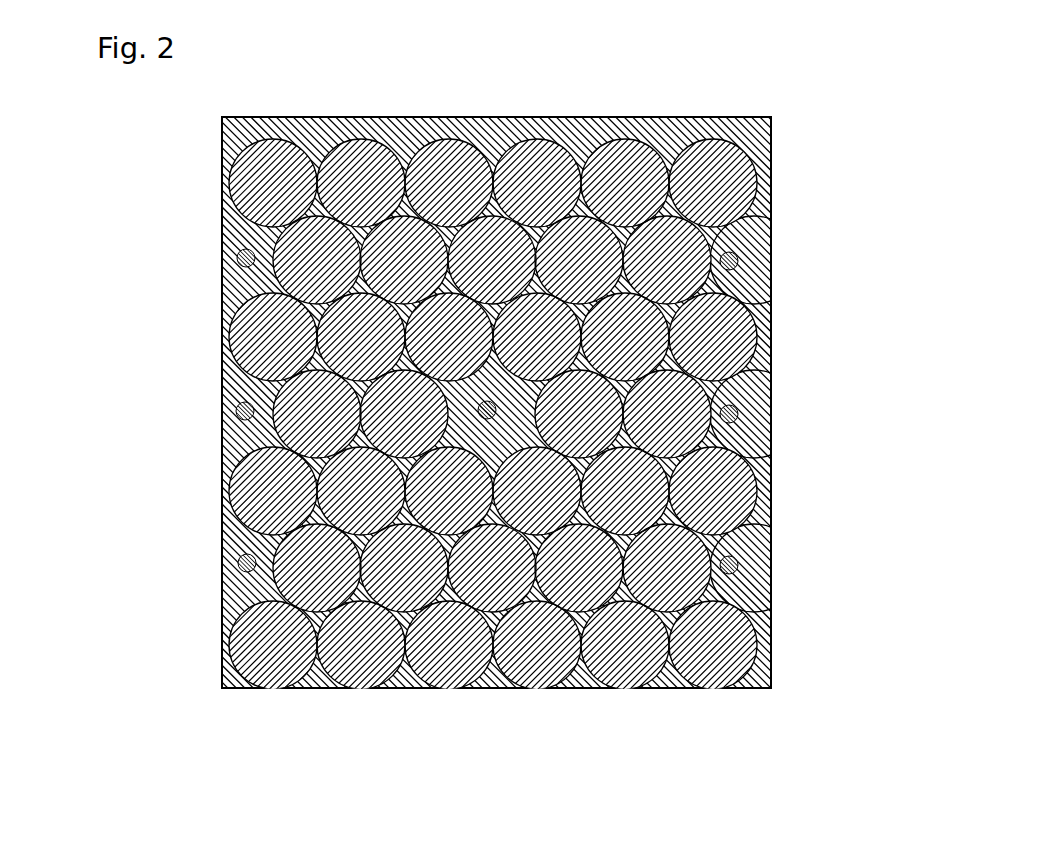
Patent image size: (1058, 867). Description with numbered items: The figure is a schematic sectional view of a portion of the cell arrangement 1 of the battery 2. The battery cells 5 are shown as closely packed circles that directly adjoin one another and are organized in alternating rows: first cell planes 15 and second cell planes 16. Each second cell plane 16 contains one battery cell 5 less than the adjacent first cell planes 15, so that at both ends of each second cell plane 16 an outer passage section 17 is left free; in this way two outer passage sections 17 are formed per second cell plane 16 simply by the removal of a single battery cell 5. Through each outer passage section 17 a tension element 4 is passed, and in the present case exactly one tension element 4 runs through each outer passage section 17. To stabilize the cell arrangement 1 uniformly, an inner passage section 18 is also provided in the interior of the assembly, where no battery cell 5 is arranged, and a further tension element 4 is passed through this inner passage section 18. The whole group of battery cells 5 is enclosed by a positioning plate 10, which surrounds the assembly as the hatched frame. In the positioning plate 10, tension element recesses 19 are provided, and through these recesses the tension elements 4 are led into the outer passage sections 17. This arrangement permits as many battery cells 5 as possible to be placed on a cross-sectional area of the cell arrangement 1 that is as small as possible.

The cell arrangement 1 is at (527, 104).
The battery 2 is at (627, 104).
The tension element 4 is at (222, 284).
The battery cell 5 is at (714, 122).
The positioning plate 10 is at (777, 682).
The first cell plane 15 is at (192, 174).
The second cell plane 16 is at (192, 263).
The outer passage section 17 is at (200, 450).
The inner passage section 18 is at (498, 433).
The tension element recess 19 is at (238, 255).